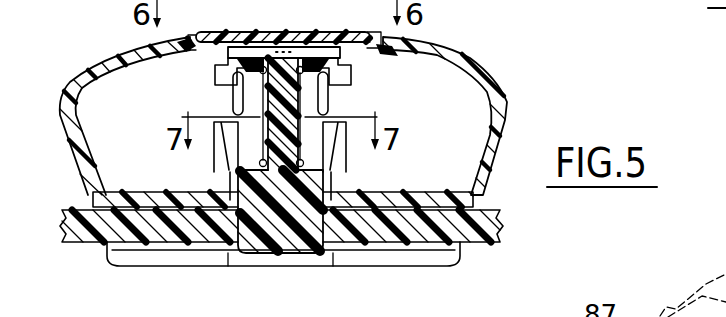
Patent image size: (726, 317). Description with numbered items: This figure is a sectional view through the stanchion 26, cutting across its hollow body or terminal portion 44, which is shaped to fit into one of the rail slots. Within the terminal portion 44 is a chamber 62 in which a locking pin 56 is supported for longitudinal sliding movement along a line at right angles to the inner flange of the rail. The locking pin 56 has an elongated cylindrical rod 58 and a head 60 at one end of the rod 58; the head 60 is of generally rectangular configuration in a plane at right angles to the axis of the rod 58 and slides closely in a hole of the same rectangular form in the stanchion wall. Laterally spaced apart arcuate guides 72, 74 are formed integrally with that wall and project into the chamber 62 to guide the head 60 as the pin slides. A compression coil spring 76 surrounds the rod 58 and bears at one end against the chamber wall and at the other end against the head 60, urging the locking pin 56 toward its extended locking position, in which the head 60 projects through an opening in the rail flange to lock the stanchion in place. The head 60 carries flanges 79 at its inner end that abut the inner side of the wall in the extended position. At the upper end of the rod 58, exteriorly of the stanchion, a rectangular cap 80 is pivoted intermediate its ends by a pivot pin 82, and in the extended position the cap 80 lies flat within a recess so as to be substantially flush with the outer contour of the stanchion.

The stanchion 26 is at (515, 104).
The hollow body or terminal portion 44 is at (96, 64).
The locking pin 56 is at (250, 258).
The elongated cylindrical rod 58 is at (291, 40).
The head 60 is at (293, 250).
The chamber 62 is at (472, 92).
The arcuate guide 72 is at (214, 166).
The arcuate guide 74 is at (350, 168).
The compression coil spring 76 is at (322, 108).
The flanges 79 is at (212, 212).
The cap 80 is at (343, 40).
The pivot pin 82 is at (240, 47).